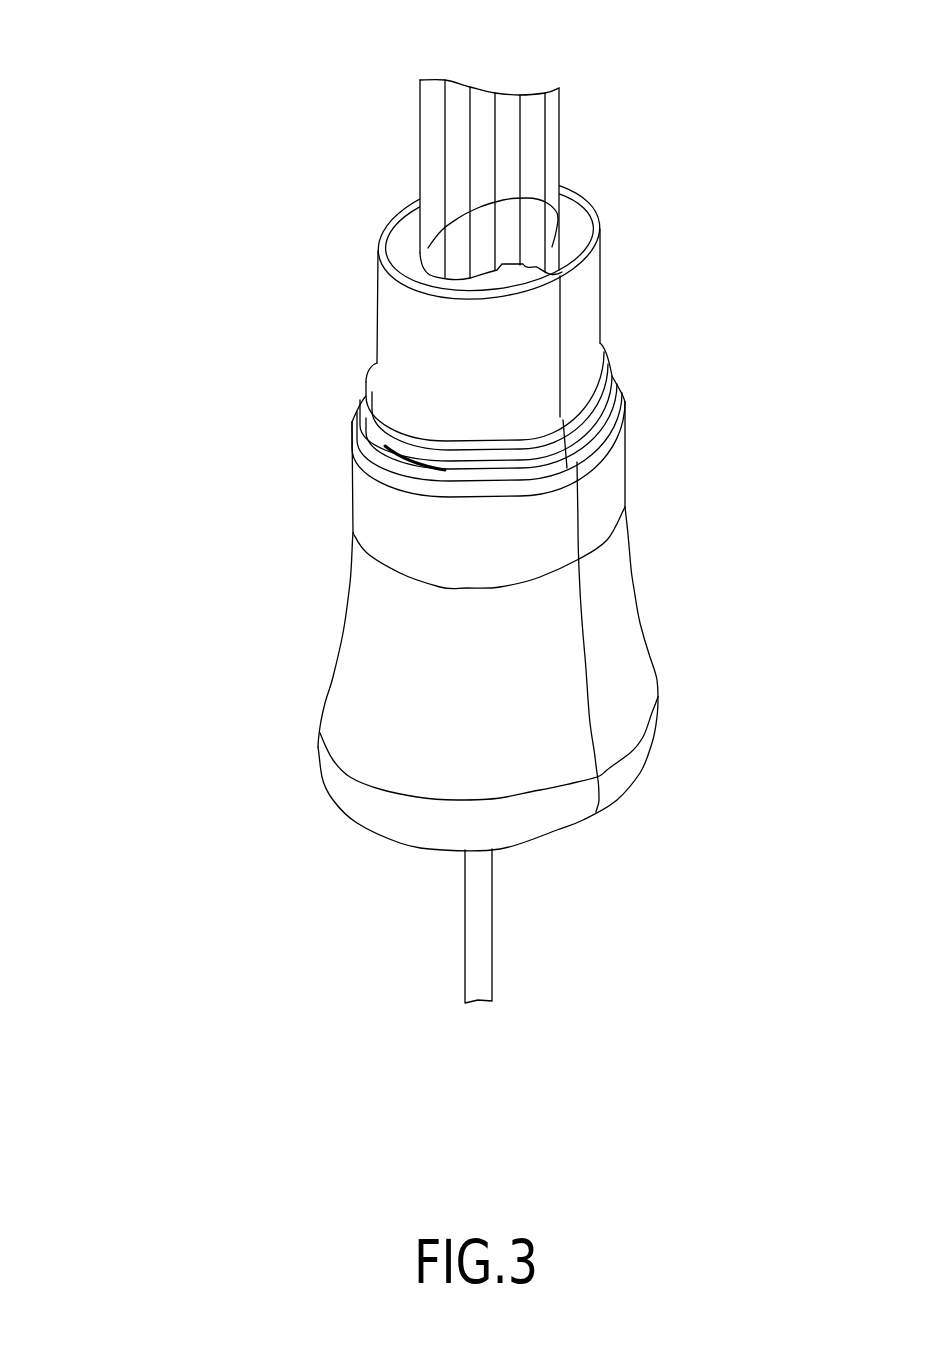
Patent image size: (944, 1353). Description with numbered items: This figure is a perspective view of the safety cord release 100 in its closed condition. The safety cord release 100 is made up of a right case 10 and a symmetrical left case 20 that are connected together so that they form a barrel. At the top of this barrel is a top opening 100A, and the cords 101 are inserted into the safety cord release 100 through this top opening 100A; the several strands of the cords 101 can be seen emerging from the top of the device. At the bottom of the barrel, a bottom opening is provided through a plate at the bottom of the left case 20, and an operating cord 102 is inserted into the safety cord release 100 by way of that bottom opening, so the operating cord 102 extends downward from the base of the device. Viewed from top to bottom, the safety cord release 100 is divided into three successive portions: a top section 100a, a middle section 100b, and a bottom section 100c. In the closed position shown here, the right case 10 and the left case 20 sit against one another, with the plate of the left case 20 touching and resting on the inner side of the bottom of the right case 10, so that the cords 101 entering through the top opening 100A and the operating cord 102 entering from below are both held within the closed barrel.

The safety cord release 100 is at (246, 600).
The right case 10 is at (337, 691).
The left case 20 is at (660, 580).
The top section 100a is at (577, 317).
The middle section 100b is at (602, 482).
The bottom section 100c is at (622, 717).
The top opening 100A is at (420, 252).
The cords 101 is at (433, 116).
The operating cord 102 is at (473, 962).